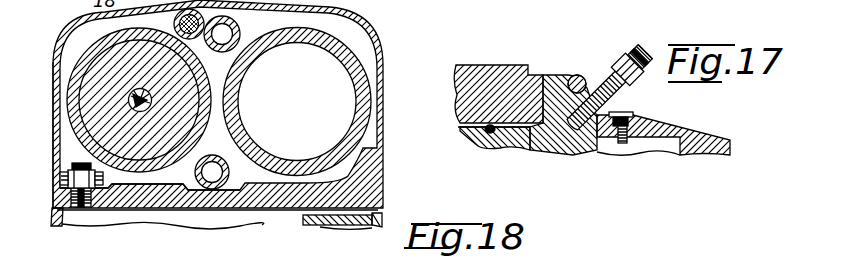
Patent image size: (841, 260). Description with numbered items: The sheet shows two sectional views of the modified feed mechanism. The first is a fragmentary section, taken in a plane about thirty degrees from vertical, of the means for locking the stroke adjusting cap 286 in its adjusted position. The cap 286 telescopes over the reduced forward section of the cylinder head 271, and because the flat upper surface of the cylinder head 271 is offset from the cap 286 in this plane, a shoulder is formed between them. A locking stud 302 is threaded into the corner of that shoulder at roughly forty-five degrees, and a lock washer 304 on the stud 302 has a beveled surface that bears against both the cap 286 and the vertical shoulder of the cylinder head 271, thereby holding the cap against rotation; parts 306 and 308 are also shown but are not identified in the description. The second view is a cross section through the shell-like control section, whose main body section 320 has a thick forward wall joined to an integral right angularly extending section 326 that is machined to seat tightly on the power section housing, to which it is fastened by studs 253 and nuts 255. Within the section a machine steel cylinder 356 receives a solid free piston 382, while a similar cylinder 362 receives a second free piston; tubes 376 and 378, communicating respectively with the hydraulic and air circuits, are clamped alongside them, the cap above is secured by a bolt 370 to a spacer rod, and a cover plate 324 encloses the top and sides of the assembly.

In FIG. 18, the studs 253 is at (82, 165).
In FIG. 18, the nuts 255 is at (62, 177).
In FIG. 17, the cylinder head 271 is at (552, 75).
In FIG. 17, the cap 286 is at (688, 136).
In FIG. 17, the locking stud 302 is at (573, 156).
In FIG. 17, the lock washer 304 is at (578, 76).
In FIG. 17, the angled screw 306 is at (628, 50).
In FIG. 17, the fastening bolt 308 is at (630, 111).
In FIG. 18, the main body section 320 is at (255, 211).
In FIG. 18, the cover plate 324 is at (383, 97).
In FIG. 18, the right angularly extending section 326 is at (150, 202).
In FIG. 18, the cylinder 356 is at (155, 43).
In FIG. 18, the cylinder 362 is at (318, 44).
In FIG. 18, the bolt 370 is at (172, 15).
In FIG. 18, the tube 376 is at (239, 26).
In FIG. 18, the tube 378 is at (213, 189).
In FIG. 18, the free piston 382 is at (88, 108).